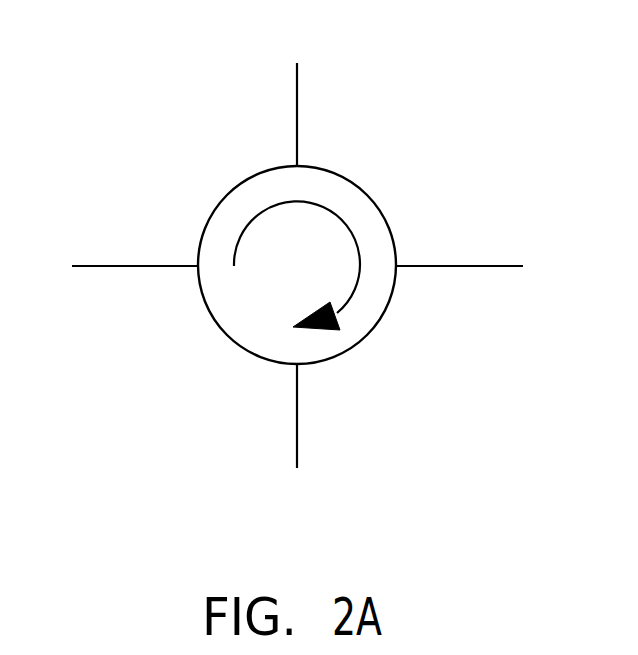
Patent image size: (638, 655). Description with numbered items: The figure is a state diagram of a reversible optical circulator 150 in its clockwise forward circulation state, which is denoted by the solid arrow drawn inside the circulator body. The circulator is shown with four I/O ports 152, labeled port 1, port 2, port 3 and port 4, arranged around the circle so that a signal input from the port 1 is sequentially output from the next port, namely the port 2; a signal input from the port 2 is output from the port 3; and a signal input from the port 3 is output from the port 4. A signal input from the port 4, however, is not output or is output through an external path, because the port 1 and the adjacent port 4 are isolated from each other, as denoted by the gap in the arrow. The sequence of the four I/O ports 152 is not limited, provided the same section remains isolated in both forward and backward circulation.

The reversible optical circulator 150 is at (363, 192).
The I/O ports 152 is at (301, 266).
The port 1 is at (127, 241).
The port 2 is at (298, 93).
The port 3 is at (473, 241).
The port 4 is at (296, 438).